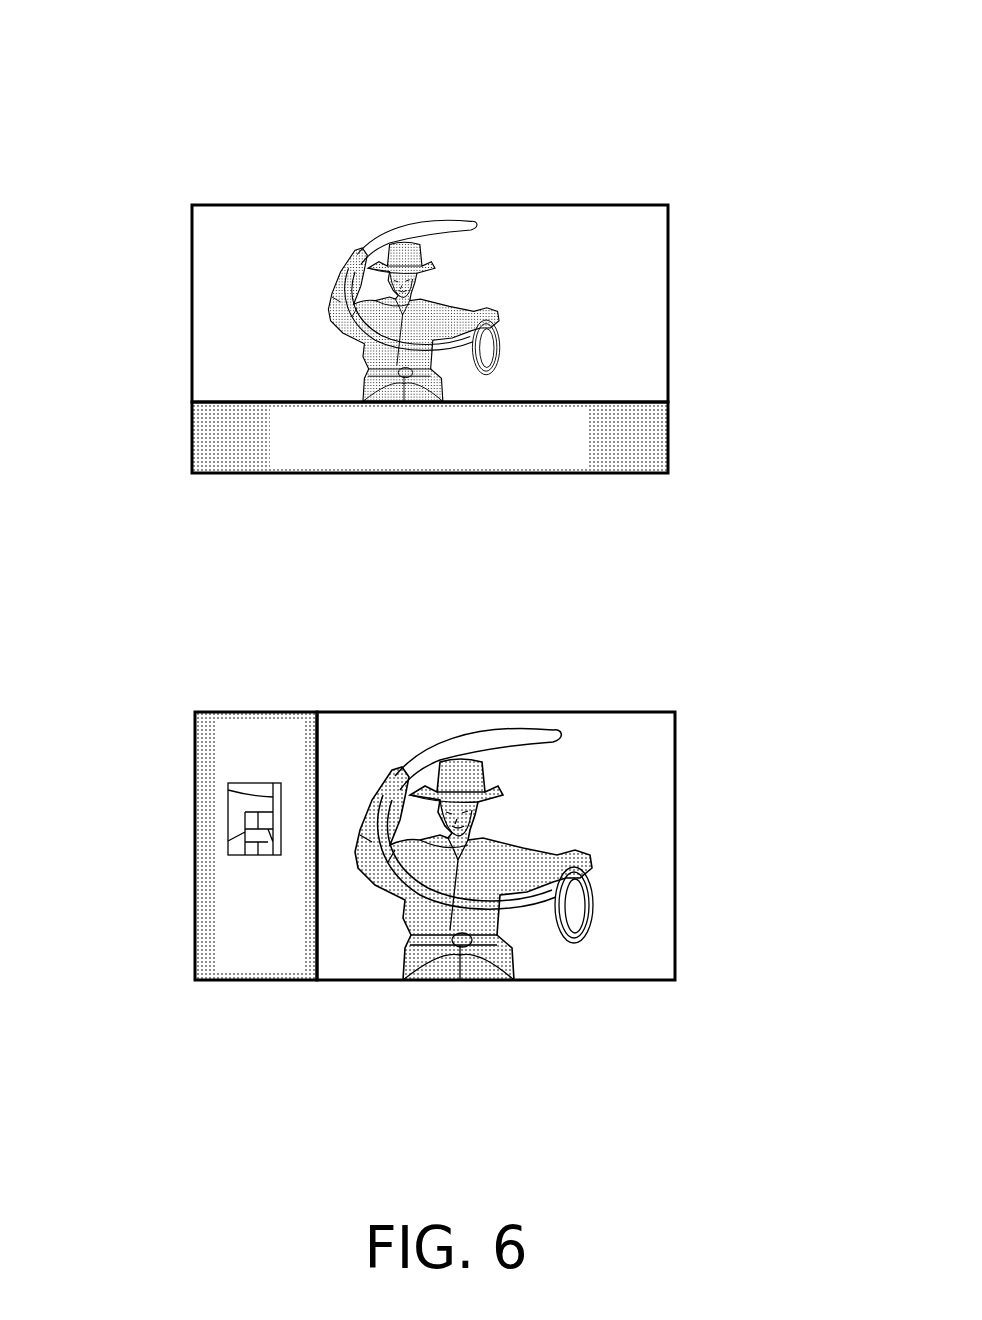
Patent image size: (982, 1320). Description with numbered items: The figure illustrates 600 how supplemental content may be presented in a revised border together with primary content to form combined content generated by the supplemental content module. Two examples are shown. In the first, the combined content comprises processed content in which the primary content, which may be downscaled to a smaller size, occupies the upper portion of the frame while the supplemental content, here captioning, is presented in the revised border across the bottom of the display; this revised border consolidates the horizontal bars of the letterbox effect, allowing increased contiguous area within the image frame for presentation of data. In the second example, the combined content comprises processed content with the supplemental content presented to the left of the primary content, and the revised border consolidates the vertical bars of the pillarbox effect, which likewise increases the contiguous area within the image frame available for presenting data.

The illustration of supplemental content presented in revised border 600 is at (742, 64).